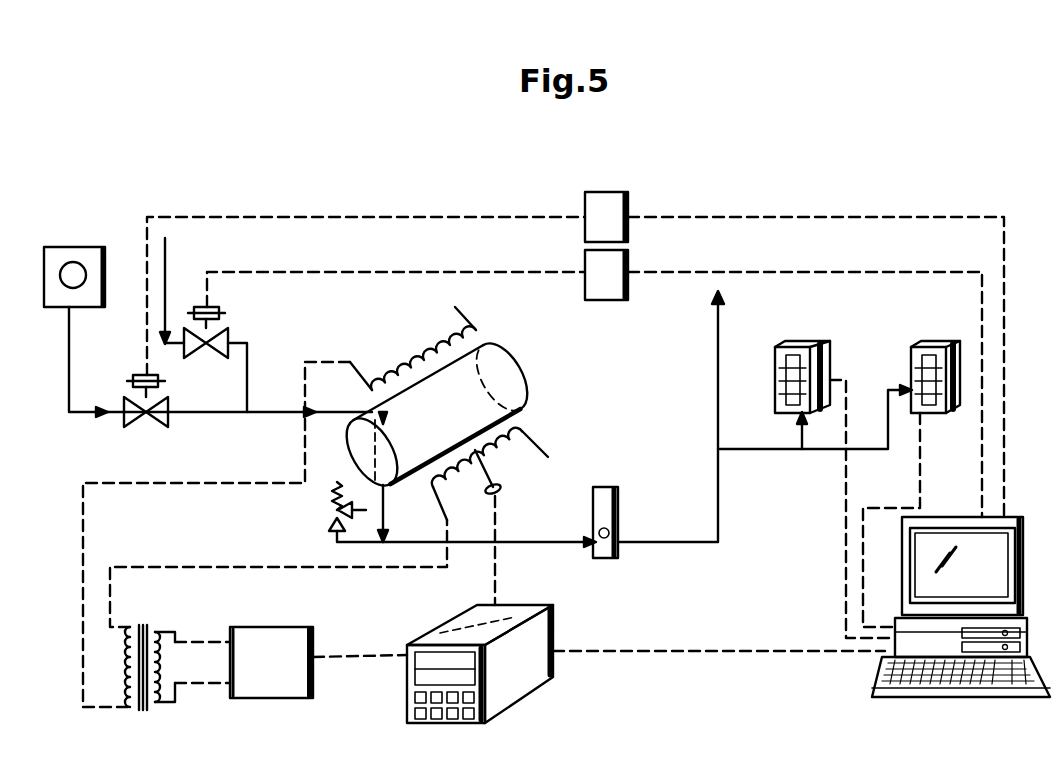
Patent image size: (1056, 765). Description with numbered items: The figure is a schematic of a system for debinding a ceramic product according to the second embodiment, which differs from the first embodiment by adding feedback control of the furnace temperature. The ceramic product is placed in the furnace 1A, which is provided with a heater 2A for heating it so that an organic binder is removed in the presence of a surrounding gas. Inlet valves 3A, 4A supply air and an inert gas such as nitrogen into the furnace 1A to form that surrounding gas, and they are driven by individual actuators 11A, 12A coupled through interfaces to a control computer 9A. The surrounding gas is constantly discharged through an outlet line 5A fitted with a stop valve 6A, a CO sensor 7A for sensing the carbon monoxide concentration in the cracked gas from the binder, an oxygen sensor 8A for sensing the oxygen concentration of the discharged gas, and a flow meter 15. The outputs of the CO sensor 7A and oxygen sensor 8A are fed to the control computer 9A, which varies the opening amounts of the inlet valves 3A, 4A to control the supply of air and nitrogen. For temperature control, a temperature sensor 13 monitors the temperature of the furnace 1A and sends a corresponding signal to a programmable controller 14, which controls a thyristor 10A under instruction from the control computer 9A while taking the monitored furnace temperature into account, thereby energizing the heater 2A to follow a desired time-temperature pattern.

The furnace 1A is at (510, 370).
The heater 2A is at (467, 335).
The inlet valve 3A is at (127, 416).
The inlet valve 4A is at (228, 333).
The outlet line 5A is at (718, 475).
The stop valve 6A is at (330, 510).
The CO sensor 7A is at (815, 345).
The oxygen sensor 8A is at (942, 345).
The control computer 9A is at (893, 641).
The thyristor 10A is at (277, 699).
The actuator 11A is at (621, 192).
The actuator 12A is at (615, 300).
The temperature sensor 13 is at (501, 488).
The programmable controller 14 is at (545, 680).
The flow meter 15 is at (618, 555).